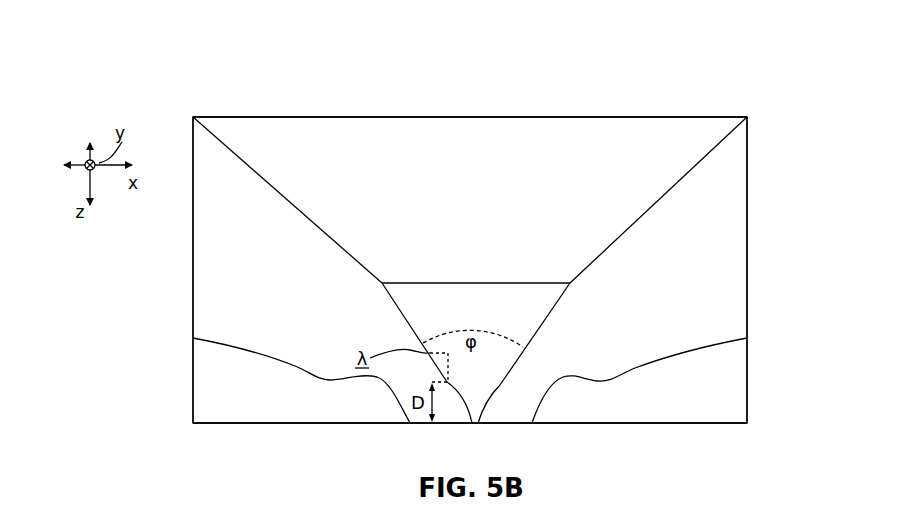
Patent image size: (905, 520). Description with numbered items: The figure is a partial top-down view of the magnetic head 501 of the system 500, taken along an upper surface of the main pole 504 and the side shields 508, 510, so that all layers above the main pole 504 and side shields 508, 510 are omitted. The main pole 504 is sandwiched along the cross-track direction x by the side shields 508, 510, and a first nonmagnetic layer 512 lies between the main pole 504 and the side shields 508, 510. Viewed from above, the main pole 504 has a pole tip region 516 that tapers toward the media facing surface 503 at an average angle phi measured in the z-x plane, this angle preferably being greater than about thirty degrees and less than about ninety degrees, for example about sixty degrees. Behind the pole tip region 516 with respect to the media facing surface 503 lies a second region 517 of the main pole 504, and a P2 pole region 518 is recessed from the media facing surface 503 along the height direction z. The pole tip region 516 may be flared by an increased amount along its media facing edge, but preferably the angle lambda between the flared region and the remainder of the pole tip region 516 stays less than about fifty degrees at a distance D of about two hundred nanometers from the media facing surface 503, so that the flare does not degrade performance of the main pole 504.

The system 500 is at (131, 67).
The magnetic head 501 is at (129, 293).
The media facing surface 503 is at (290, 432).
The main pole 504 is at (619, 275).
The side shield 508 is at (229, 395).
The side shield 510 is at (655, 400).
The first nonmagnetic layer 512 is at (261, 291).
The pole tip region 516 is at (485, 414).
The second region 517 is at (455, 312).
The P2 pole region 518 is at (453, 206).